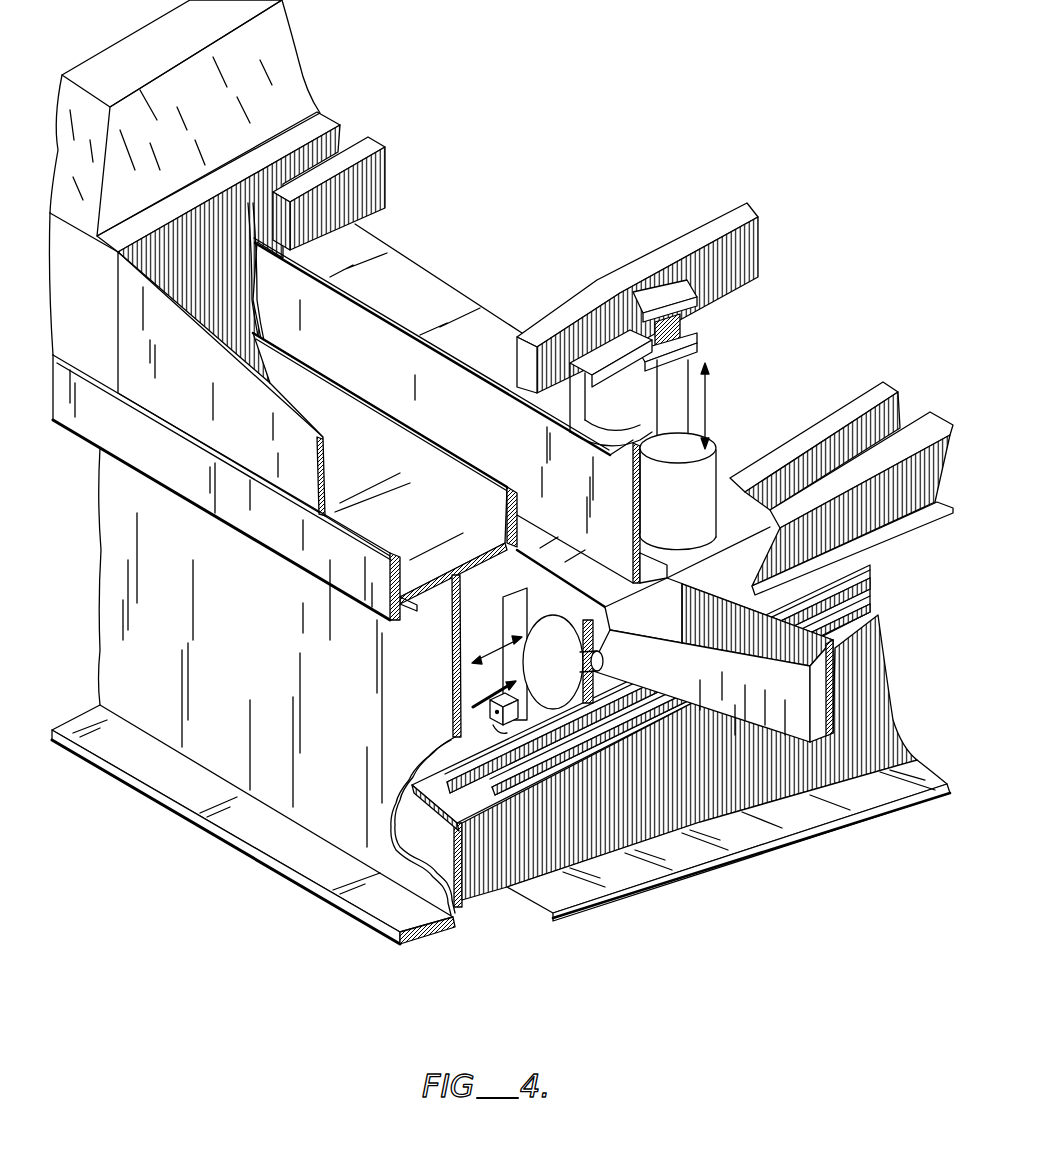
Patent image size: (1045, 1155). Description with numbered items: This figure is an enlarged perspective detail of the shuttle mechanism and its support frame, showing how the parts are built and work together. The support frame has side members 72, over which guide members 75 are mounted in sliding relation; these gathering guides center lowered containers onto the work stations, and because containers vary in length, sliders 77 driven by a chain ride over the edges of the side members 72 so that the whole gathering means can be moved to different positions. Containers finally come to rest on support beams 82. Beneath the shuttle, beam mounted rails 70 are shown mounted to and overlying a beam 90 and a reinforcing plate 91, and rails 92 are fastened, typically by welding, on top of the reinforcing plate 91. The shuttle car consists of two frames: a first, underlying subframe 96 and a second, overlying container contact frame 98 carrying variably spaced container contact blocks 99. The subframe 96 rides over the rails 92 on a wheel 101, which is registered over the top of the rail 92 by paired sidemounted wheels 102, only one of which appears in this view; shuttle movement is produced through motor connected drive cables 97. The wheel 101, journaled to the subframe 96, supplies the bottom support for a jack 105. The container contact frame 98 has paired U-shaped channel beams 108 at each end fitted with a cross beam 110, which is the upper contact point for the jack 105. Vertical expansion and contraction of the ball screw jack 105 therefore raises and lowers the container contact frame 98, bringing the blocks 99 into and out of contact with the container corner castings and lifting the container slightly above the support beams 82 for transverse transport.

The beam mounted rails 70 is at (650, 706).
The side members 72 is at (268, 663).
The guide members 75 is at (192, 124).
The sliders 77 is at (208, 395).
The support beams 82 is at (320, 125).
The beam 90 is at (637, 840).
The reinforcing plate 91 is at (547, 800).
The rails 92 is at (476, 798).
The subframe 96 is at (817, 690).
The drive cables 97 is at (488, 690).
The container contact frame 98 is at (430, 293).
The container contact blocks 99 is at (378, 180).
The wheel 101 is at (555, 653).
The sidemounted wheels 102 is at (490, 716).
The jack 105 is at (703, 463).
The channel beams 108 is at (547, 318).
The cross beam 110 is at (660, 287).